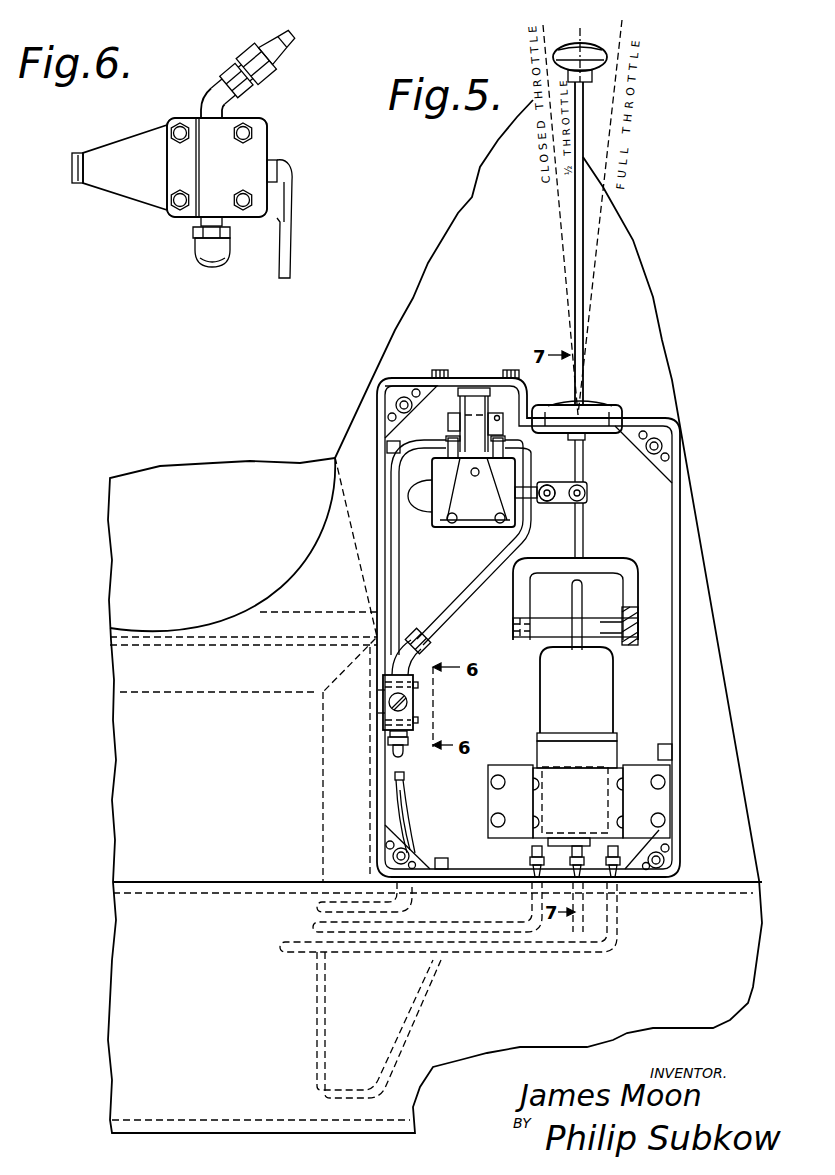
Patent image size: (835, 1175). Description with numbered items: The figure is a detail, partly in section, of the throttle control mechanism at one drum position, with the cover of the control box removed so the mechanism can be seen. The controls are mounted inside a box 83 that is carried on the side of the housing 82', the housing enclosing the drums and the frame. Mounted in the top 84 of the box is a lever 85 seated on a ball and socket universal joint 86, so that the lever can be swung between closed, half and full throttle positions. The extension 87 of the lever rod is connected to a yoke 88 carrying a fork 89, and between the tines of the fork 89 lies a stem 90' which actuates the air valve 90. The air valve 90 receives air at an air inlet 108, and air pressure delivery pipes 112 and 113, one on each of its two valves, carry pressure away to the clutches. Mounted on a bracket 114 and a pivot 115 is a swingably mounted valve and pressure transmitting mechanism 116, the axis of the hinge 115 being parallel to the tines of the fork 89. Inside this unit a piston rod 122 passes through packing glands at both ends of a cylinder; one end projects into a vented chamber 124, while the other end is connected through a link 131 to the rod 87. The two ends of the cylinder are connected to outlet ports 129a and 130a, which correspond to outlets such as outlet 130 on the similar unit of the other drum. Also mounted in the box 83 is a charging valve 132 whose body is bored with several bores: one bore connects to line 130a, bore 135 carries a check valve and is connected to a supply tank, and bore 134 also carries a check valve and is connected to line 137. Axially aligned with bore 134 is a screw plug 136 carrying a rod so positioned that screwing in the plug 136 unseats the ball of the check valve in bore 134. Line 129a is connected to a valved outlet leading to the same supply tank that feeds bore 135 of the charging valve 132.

In FIG. 5, the housing 82' is at (435, 616).
In FIG. 5, the box 83 is at (673, 517).
In FIG. 5, the top 84 is at (657, 420).
In FIG. 5, the lever 85 is at (573, 328).
In FIG. 5, the ball and socket universal joint 86 is at (588, 402).
In FIG. 5, the extension 87 is at (577, 483).
In FIG. 5, the yoke 88 is at (550, 567).
In FIG. 5, the fork 89 is at (547, 637).
In FIG. 5, the air valve 90 is at (579, 746).
In FIG. 5, the stem 90' is at (559, 615).
In FIG. 5, the air inlet 108 is at (572, 867).
In FIG. 5, the air pressure delivery pipe 112 is at (530, 868).
In FIG. 5, the air pressure delivery pipe 113 is at (623, 861).
In FIG. 5, the bracket 114 is at (483, 388).
In FIG. 5, the pivot 115 is at (450, 420).
In FIG. 5, the valve and pressure transmitting mechanism 116 is at (473, 481).
In FIG. 5, the piston rod 122 is at (528, 500).
In FIG. 5, the vented chamber 124 is at (416, 497).
In FIG. 5, the outlet port 129a is at (399, 567).
In FIG. 5, the outlet port 130a is at (512, 547).
In FIG. 6, the outlet port 130 is at (289, 42).
In FIG. 5, the outlet port 130 is at (413, 653).
In FIG. 5, the link 131 is at (568, 490).
In FIG. 6, the charging valve 132 is at (168, 117).
In FIG. 5, the charging valve 132 is at (415, 700).
In FIG. 6, the bore 134 is at (252, 153).
In FIG. 5, the bore 134 is at (387, 713).
In FIG. 6, the bore 135 is at (195, 247).
In FIG. 5, the bore 135 is at (408, 755).
In FIG. 6, the screw plug 136 is at (72, 168).
In FIG. 5, the screw plug 136 is at (385, 693).
In FIG. 5, the line 137 is at (417, 833).